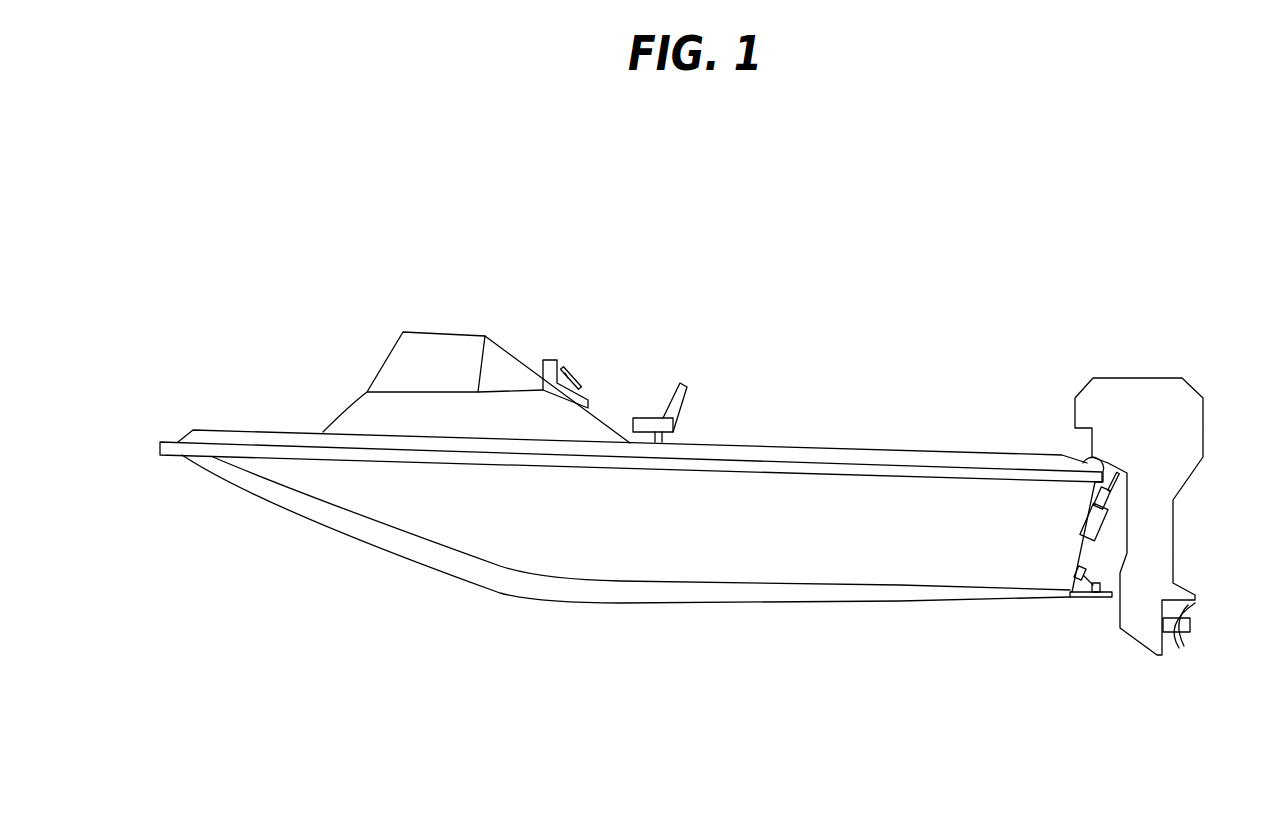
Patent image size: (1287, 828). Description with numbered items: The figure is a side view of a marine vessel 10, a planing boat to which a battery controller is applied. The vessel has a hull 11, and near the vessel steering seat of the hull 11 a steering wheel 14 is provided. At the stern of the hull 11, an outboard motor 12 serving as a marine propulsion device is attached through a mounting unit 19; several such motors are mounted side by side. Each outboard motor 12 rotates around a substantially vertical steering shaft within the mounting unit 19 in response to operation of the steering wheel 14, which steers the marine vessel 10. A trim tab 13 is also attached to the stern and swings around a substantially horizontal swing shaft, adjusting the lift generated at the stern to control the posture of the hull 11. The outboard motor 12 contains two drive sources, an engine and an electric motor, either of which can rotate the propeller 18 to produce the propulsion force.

The marine vessel 10 is at (755, 283).
The hull 11 is at (815, 447).
The outboard motor 12 is at (1193, 387).
The trim tab 13 is at (1092, 602).
The steering wheel 14 is at (567, 375).
The propeller 18 is at (1183, 650).
The mounting unit 19 is at (1087, 460).